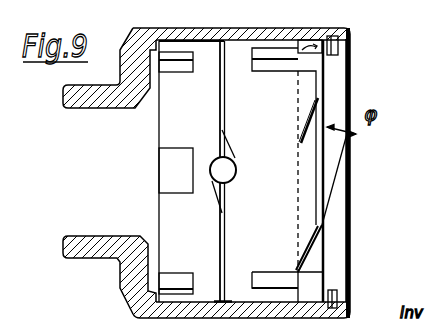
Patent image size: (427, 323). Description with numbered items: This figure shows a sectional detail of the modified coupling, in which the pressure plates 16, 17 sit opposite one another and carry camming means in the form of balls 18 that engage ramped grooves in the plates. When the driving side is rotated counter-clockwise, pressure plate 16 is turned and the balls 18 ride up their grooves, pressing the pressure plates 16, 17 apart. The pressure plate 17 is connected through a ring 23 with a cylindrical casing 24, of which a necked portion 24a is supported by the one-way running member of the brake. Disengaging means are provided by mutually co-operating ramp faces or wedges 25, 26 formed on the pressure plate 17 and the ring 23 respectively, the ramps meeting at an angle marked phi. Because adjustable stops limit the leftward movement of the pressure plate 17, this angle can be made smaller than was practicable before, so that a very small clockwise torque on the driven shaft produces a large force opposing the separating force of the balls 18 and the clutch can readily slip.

The pressure plate 16 is at (192, 208).
The pressure plate 17 is at (291, 226).
The balls 18 is at (221, 168).
The ring 23 is at (317, 67).
The cylindrical casing 24 is at (144, 52).
The necked portion 24a is at (88, 250).
The ramp face 25 is at (315, 114).
The ramp face 26 is at (324, 128).